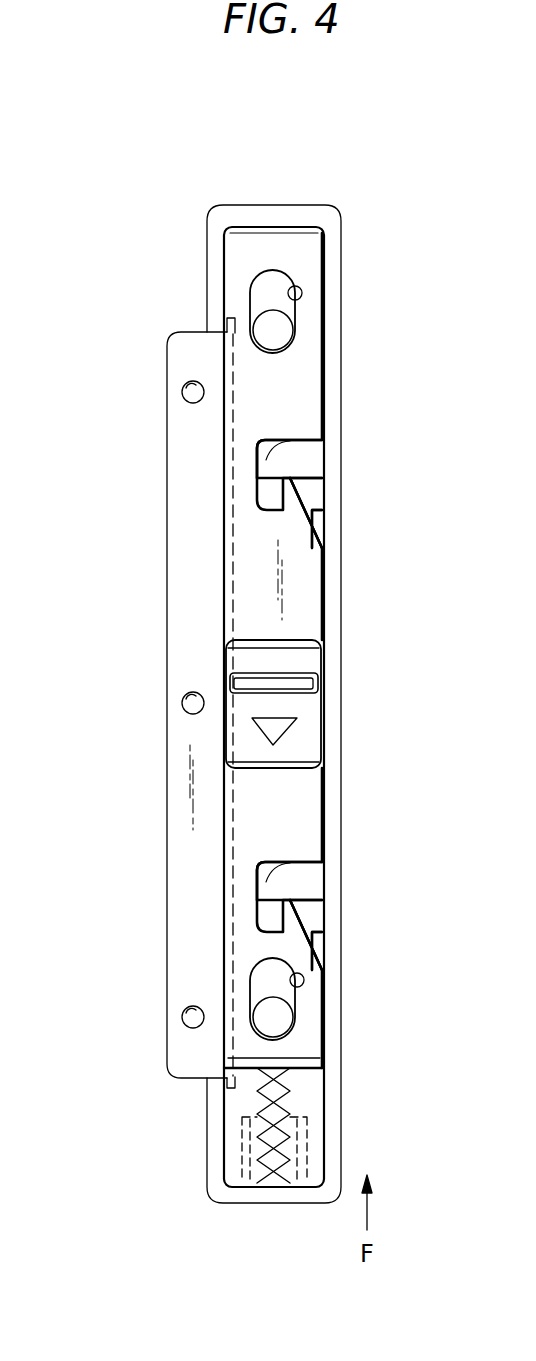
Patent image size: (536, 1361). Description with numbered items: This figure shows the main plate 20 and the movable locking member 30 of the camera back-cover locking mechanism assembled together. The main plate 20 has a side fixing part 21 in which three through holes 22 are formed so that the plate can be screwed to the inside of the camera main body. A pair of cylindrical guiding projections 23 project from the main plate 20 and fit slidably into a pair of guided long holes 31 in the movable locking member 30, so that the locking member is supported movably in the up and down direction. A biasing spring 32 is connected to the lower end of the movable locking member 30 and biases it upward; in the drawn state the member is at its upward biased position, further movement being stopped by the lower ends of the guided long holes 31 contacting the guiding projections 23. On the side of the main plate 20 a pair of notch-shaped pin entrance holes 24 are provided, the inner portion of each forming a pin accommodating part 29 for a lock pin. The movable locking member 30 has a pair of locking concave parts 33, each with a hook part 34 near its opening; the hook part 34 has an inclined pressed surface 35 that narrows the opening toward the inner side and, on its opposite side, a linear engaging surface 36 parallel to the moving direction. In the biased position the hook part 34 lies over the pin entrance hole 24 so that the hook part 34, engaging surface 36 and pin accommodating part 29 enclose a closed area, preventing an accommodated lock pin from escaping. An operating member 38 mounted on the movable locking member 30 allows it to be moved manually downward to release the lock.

The main plate 20 is at (180, 324).
The side fixing part 21 is at (192, 585).
The through holes 22 is at (182, 392).
The cylindrical guiding projections 23 is at (278, 330).
The pin entrance holes 24 is at (320, 492).
The pin accommodating part 29 is at (273, 481).
The movable locking member 30 is at (295, 393).
The guided long holes 31 is at (298, 288).
The biasing spring 32 is at (300, 1092).
The locking concave parts 33 is at (267, 458).
The hook part 34 is at (300, 481).
The pressed surface 35 is at (307, 500).
The engaging surface 36 is at (268, 497).
The operating member 38 is at (302, 723).